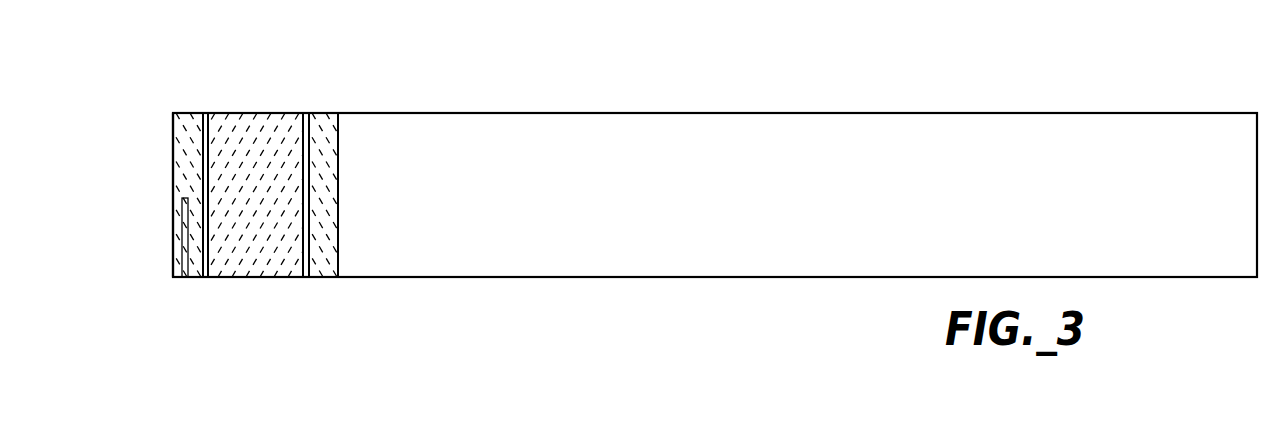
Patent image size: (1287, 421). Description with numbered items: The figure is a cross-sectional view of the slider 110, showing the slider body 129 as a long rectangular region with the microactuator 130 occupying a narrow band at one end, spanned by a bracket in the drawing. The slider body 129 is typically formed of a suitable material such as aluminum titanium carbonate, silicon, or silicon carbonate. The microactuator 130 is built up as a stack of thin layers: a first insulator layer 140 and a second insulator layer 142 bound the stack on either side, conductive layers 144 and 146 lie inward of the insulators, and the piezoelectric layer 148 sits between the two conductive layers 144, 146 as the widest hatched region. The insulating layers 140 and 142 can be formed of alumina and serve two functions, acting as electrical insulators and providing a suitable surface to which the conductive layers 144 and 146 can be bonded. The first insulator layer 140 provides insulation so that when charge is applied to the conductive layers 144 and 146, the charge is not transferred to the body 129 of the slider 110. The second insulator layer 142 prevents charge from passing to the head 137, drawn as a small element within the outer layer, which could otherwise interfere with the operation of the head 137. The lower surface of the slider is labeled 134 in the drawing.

The slider 110 is at (923, 93).
The slider body 129 is at (936, 189).
The microactuator 130 is at (338, 73).
The outer surface 134 is at (507, 277).
The head 137 is at (185, 277).
The first insulator layer 140 is at (328, 277).
The second insulator layer 142 is at (173, 228).
The conductive layer 144 is at (305, 277).
The conductive layer 146 is at (205, 277).
The piezoelectric layer 148 is at (233, 113).